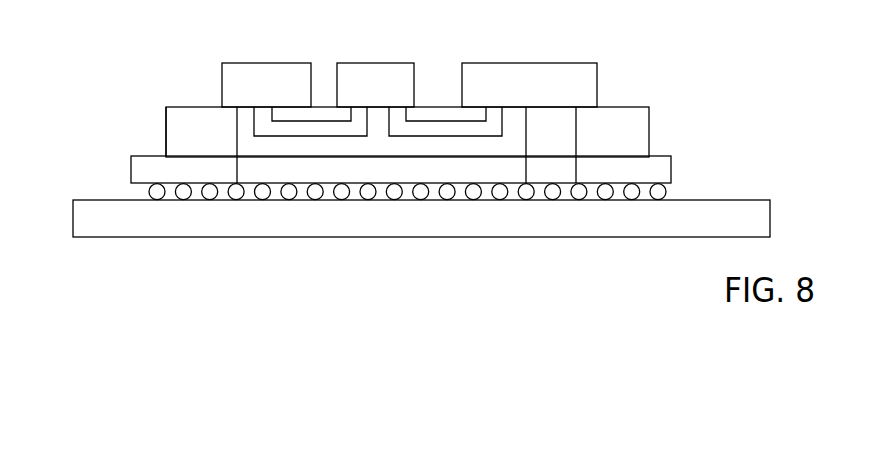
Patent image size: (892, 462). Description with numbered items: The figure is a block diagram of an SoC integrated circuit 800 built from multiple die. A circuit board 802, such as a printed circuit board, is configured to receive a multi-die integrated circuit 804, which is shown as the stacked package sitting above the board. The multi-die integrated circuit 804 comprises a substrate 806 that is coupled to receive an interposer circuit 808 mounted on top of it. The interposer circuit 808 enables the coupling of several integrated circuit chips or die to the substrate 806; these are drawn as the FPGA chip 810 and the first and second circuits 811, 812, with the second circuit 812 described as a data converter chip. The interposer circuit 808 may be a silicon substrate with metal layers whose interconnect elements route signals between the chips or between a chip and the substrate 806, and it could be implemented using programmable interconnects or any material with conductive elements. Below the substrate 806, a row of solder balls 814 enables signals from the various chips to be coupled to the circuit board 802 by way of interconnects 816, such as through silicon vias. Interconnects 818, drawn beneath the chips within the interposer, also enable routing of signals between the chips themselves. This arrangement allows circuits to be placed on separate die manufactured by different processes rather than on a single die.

The SoC integrated circuit 800 is at (100, 266).
The circuit board 802 is at (750, 199).
The multi-die integrated circuit 804 is at (725, 65).
The substrate 806 is at (672, 160).
The interposer circuit 808 is at (650, 123).
The FPGA chip 810 is at (270, 63).
The first circuit 811 is at (358, 63).
The second circuit 812 is at (557, 63).
The solder balls 814 is at (667, 190).
The interconnects 816 is at (235, 130).
The interconnects 818 is at (317, 136).